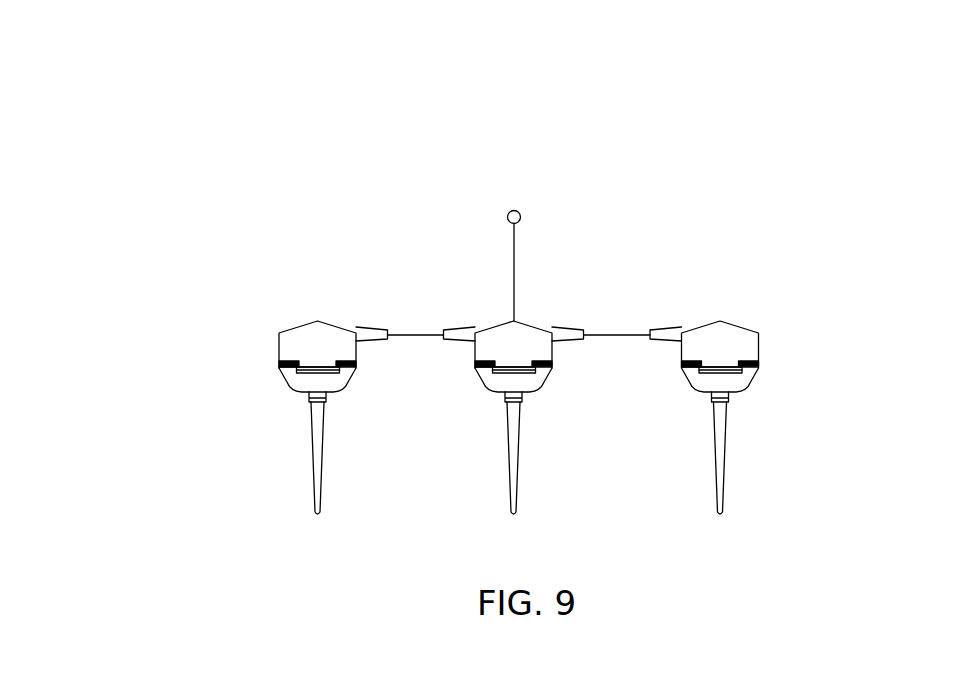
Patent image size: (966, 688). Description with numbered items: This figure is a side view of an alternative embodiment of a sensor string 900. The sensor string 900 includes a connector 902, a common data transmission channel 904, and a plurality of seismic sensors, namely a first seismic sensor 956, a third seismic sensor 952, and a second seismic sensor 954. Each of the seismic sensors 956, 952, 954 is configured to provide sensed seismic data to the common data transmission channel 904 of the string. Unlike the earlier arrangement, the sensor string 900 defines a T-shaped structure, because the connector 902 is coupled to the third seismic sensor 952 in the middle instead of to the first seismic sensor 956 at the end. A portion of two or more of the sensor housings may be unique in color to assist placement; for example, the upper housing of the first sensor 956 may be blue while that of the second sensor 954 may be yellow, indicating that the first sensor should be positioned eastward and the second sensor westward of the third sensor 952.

The sensor string 900 is at (853, 123).
The connector 902 is at (514, 210).
The common data transmission channel 904 is at (514, 265).
The third seismic sensor 952 is at (543, 285).
The second seismic sensor 954 is at (755, 283).
The first seismic sensor 956 is at (288, 283).